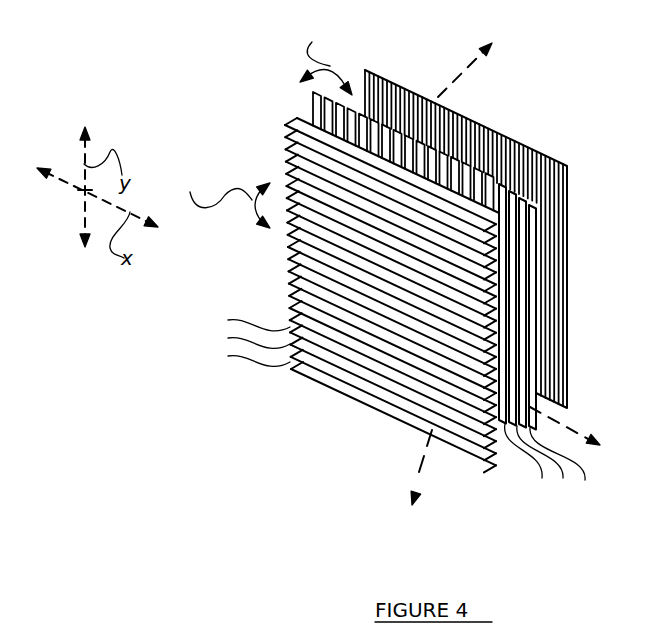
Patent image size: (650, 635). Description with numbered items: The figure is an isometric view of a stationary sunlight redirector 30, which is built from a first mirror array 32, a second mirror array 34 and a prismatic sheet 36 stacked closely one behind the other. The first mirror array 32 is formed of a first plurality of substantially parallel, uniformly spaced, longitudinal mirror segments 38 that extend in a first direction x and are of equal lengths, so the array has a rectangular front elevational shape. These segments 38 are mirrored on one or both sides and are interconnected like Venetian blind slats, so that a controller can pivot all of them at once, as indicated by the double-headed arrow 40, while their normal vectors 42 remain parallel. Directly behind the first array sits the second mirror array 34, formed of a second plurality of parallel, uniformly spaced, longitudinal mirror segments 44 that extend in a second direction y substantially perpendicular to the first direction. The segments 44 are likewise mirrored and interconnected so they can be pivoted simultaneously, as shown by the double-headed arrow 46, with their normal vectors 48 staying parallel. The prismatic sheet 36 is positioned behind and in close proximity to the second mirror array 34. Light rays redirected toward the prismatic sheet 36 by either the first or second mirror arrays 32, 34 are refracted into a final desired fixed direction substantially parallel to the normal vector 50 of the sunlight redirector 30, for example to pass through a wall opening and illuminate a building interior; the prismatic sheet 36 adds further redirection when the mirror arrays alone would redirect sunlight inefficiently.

The stationary sunlight redirector 30 is at (240, 265).
The first mirror array 32 is at (345, 414).
The second mirror array 34 is at (294, 103).
The prismatic sheet 36 is at (548, 150).
The mirror segments 38 is at (222, 318).
The double-headed arrow 40 is at (221, 198).
The normal vectors 42 is at (422, 460).
The mirror segments 44 is at (588, 480).
The double-headed arrow 46 is at (326, 57).
The normal vectors 48 is at (592, 430).
The normal vector 50 is at (460, 73).